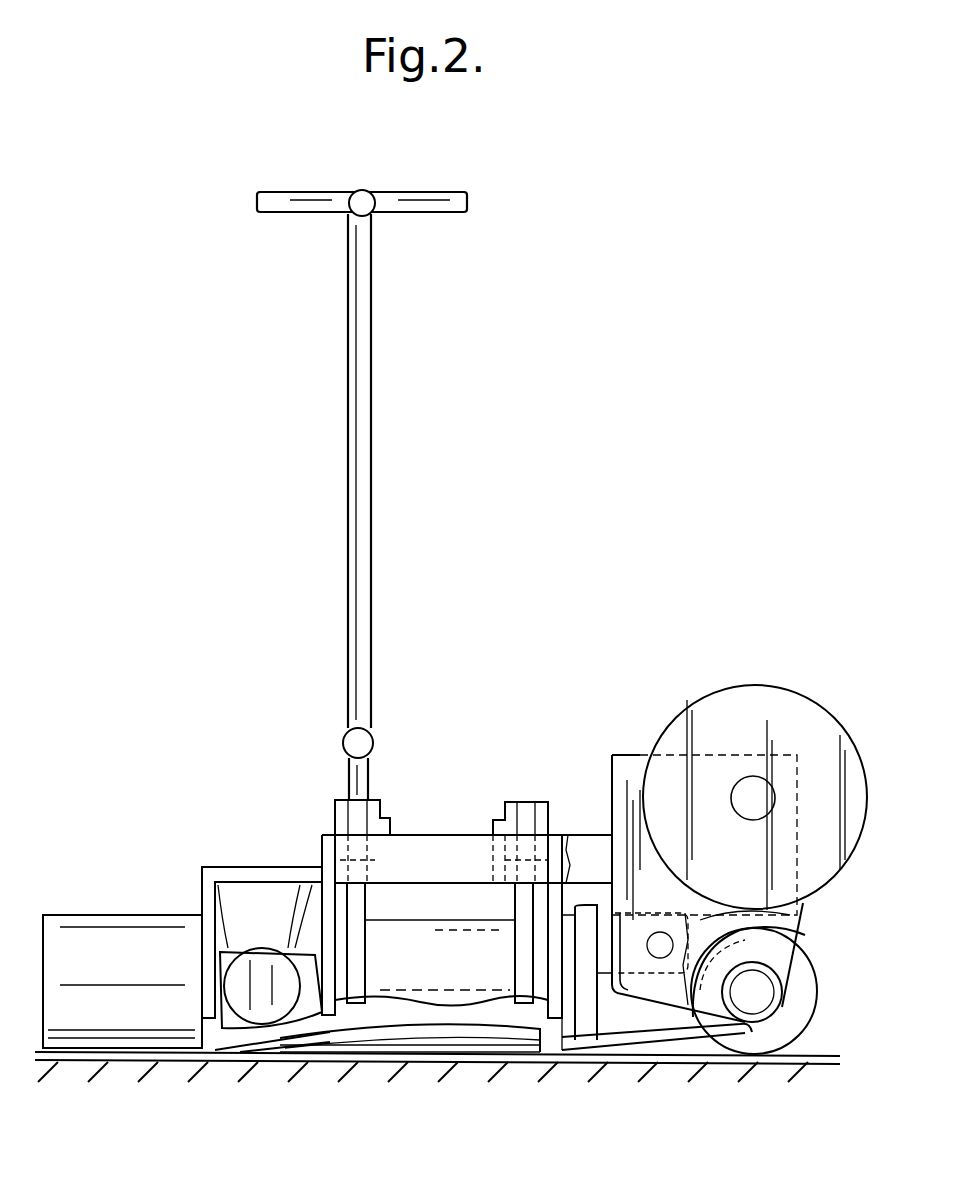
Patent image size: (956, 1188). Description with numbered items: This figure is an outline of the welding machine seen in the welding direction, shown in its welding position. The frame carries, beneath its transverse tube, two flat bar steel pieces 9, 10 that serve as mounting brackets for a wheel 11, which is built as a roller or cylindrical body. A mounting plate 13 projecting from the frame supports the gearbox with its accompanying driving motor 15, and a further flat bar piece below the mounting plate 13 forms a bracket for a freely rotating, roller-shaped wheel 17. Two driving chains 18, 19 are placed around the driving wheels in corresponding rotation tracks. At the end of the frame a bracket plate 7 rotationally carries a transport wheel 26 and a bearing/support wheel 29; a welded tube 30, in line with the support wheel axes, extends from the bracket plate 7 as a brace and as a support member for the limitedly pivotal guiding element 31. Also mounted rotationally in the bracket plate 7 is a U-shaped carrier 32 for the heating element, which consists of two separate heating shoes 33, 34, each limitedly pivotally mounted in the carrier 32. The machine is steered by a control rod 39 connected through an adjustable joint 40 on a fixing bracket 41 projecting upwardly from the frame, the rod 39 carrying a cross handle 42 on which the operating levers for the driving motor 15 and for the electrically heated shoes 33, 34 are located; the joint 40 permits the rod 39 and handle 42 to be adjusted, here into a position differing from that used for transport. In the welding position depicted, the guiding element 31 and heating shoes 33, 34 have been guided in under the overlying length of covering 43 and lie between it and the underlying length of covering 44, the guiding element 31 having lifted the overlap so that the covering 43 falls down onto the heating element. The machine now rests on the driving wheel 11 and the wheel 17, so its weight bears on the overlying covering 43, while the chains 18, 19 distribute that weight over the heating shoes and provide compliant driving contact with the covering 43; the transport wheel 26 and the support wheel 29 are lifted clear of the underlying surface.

The cross handle 42 is at (440, 195).
The control rod 39 is at (358, 278).
The adjustable joint 40 is at (352, 742).
The fixing bracket 41 is at (366, 780).
The driving chain 18 is at (350, 821).
The wheel 11 is at (437, 920).
The driving chain 19 is at (528, 810).
The mounting plate 13 is at (247, 872).
The driving motor 15 is at (253, 1012).
The wheel 17 is at (145, 920).
The flat bar steel piece 9 is at (327, 1018).
The overlying length of covering 43 is at (368, 1033).
The heating shoe 34 is at (438, 1042).
The heating shoe 33 is at (432, 1108).
The underlying length of covering 44 is at (510, 1058).
The flat bar steel piece 10 is at (560, 1018).
The bracket plate 7 is at (622, 760).
The transport wheel 26 is at (793, 700).
The U-shaped carrier 32 is at (780, 915).
The bearing/support wheel 29 is at (790, 965).
The tube 30 is at (752, 1010).
The guiding element 31 is at (640, 1040).